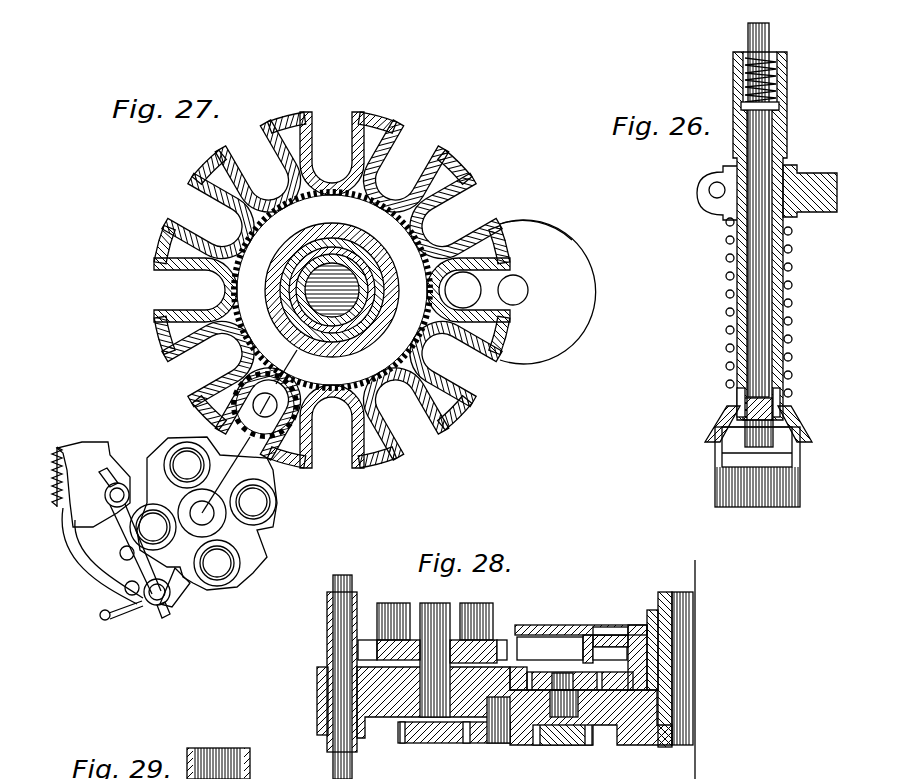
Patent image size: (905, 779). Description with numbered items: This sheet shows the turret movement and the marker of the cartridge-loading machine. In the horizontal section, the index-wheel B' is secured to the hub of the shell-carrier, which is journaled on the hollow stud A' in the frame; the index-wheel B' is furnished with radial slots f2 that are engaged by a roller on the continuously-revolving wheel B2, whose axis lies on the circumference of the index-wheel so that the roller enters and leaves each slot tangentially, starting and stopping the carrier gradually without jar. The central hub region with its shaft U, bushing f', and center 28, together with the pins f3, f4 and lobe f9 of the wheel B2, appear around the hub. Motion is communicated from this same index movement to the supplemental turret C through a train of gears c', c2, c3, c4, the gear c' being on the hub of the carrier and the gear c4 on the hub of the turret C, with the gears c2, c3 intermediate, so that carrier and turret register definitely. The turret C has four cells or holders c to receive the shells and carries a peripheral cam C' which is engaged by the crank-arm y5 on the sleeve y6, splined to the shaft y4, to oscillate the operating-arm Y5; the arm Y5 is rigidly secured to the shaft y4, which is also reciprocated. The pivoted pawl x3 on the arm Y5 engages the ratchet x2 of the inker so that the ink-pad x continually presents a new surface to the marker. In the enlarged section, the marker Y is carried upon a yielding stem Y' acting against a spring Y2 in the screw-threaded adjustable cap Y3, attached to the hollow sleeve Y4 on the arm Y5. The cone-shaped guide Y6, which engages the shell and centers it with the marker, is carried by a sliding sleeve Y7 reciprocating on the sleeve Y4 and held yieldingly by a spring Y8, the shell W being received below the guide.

In FIG. 27, the index-wheel B' is at (332, 290).
In FIG. 28, the index-wheel B' is at (581, 640).
In FIG. 27, the pocket f2 is at (332, 221).
In FIG. 28, the pocket f2 is at (523, 651).
In FIG. 27, the gear c' is at (332, 290).
In FIG. 28, the gear c' is at (609, 663).
In FIG. 27, the shaft U is at (338, 276).
In FIG. 27, the hollow stud A' is at (342, 290).
In FIG. 28, the hollow stud A' is at (520, 669).
In FIG. 27, the bushing f' is at (351, 290).
In FIG. 28, the bushing f' is at (645, 639).
In FIG. 27, the shaft 28 is at (131, 641).
In FIG. 27, the gear c2 is at (264, 431).
In FIG. 28, the gear c2 is at (546, 745).
In FIG. 27, the continuously-revolving wheel B2 is at (536, 247).
In FIG. 27, the pin f3 is at (463, 290).
In FIG. 27, the pin f4 is at (513, 290).
In FIG. 27, the lobe f9 is at (584, 338).
In FIG. 27, the peripheral cam C' is at (221, 516).
In FIG. 28, the peripheral cam C' is at (432, 618).
In FIG. 27, the supplemental turret C is at (241, 513).
In FIG. 28, the supplemental turret C is at (435, 607).
In FIG. 27, the cells or holders c is at (203, 514).
In FIG. 27, the ink-pad x is at (93, 484).
In FIG. 27, the ratchet x2 is at (57, 508).
In FIG. 27, the pivoted pawl x3 is at (80, 547).
In FIG. 27, the screw-threaded adjustable cap or sleeve Y3 is at (108, 493).
In FIG. 26, the screw-threaded adjustable cap or sleeve Y3 is at (788, 56).
In FIG. 27, the operating-arm Y5 is at (125, 549).
In FIG. 26, the operating-arm Y5 is at (821, 207).
In FIG. 27, the crank-arm y5 is at (127, 562).
In FIG. 27, the shaft y4 is at (168, 598).
In FIG. 28, the shaft y4 is at (333, 627).
In FIG. 28, the sleeve y6 is at (327, 643).
In FIG. 28, the gear c3 is at (488, 743).
In FIG. 28, the gear c4 is at (462, 743).
In FIG. 26, the marker Y is at (801, 424).
In FIG. 26, the yielding stem Y' is at (784, 210).
In FIG. 26, the spring Y2 is at (784, 91).
In FIG. 26, the hollow sleeve Y4 is at (792, 265).
In FIG. 26, the cone-shaped guide Y6 is at (720, 421).
In FIG. 26, the sliding sleeve Y7 is at (731, 350).
In FIG. 29, the sliding sleeve Y7 is at (231, 763).
In FIG. 26, the spring Y8 is at (727, 268).
In FIG. 26, the cap W is at (716, 482).